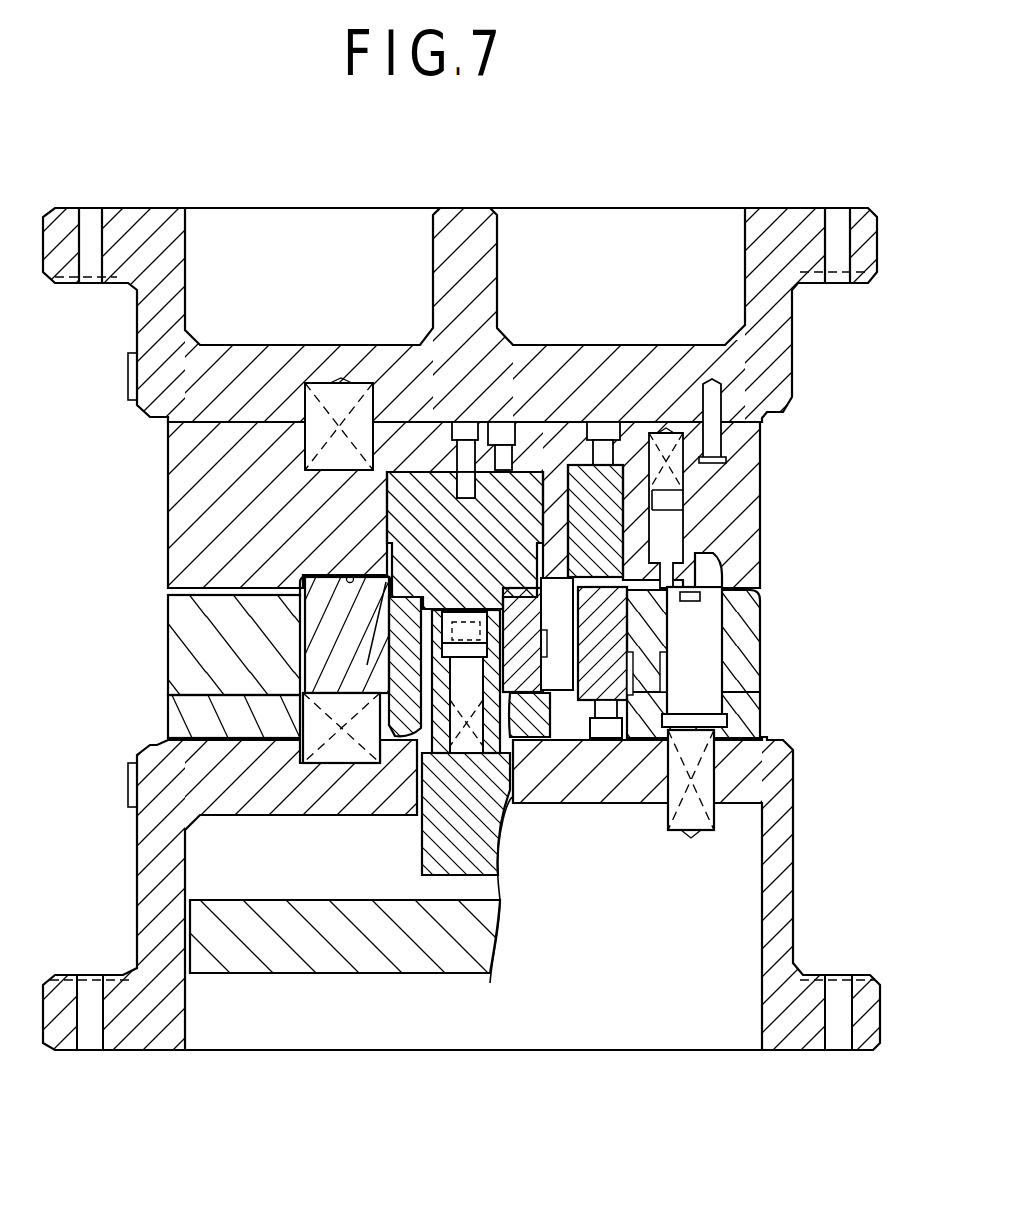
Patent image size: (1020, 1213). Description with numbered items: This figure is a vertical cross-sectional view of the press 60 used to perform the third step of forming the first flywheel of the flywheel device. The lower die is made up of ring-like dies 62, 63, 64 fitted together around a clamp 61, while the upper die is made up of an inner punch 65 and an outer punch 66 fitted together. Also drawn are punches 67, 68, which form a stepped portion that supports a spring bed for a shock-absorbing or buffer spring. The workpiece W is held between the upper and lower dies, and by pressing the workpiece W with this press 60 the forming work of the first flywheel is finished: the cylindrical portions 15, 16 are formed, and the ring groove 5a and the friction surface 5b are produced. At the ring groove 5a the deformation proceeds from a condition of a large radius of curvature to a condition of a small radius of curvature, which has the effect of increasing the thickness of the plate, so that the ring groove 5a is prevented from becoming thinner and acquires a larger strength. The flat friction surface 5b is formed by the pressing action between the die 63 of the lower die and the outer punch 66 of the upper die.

The press 60 is at (846, 461).
The clamp 61 is at (513, 695).
The ring-like die 62 is at (394, 772).
The ring-like die 63 is at (303, 612).
The ring-like die 64 is at (177, 651).
The inner punch 65 is at (415, 482).
The outer punch 66 is at (177, 522).
The punch 67 is at (610, 687).
The punch 68 is at (593, 480).
The ring groove 5a is at (347, 635).
The friction surface 5b is at (349, 577).
The cylindrical portion 15 is at (396, 742).
The cylindrical portion 16 is at (341, 705).
The workpiece W is at (706, 534).